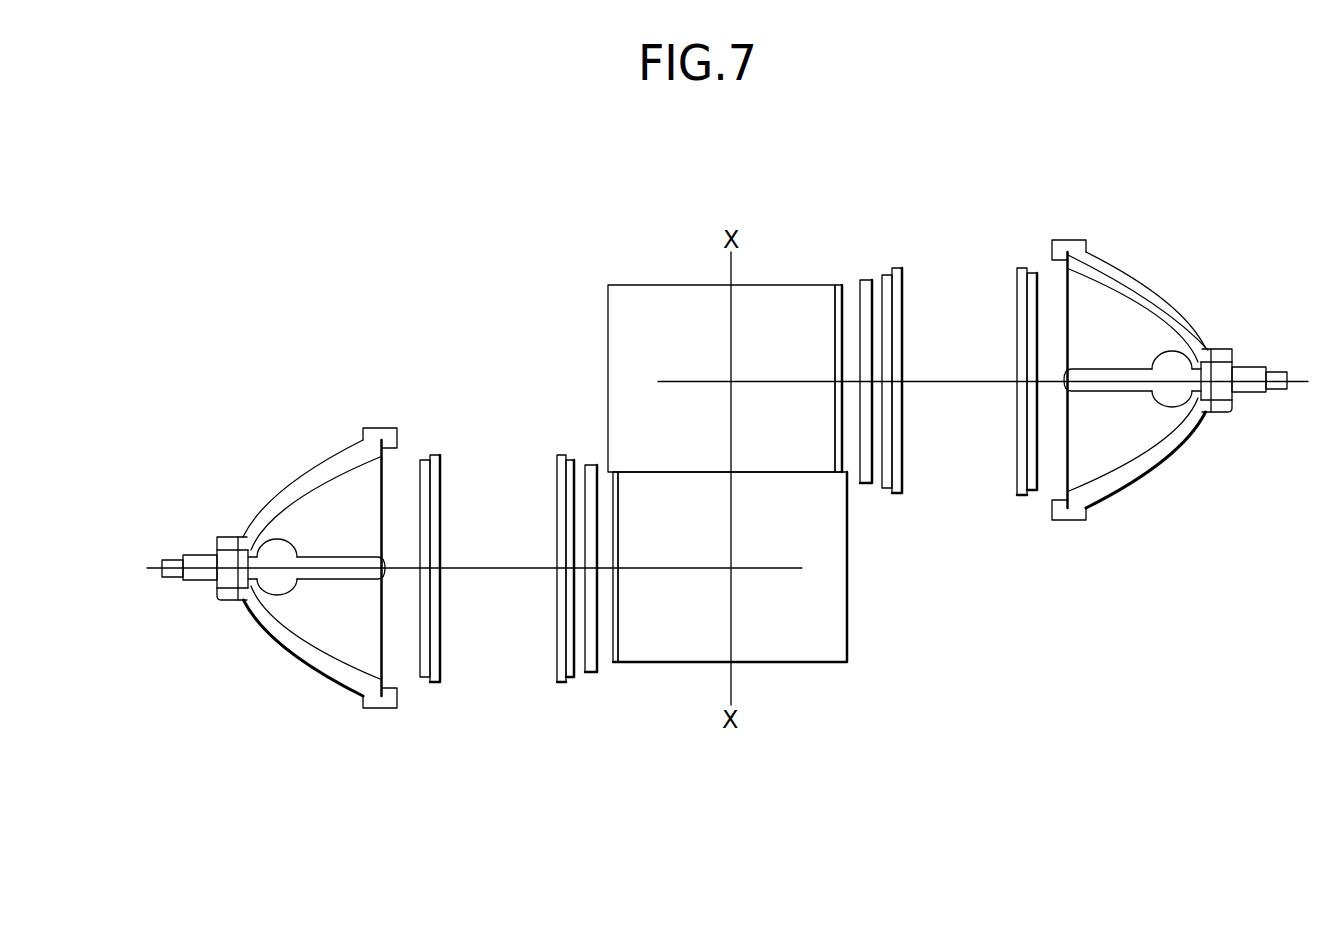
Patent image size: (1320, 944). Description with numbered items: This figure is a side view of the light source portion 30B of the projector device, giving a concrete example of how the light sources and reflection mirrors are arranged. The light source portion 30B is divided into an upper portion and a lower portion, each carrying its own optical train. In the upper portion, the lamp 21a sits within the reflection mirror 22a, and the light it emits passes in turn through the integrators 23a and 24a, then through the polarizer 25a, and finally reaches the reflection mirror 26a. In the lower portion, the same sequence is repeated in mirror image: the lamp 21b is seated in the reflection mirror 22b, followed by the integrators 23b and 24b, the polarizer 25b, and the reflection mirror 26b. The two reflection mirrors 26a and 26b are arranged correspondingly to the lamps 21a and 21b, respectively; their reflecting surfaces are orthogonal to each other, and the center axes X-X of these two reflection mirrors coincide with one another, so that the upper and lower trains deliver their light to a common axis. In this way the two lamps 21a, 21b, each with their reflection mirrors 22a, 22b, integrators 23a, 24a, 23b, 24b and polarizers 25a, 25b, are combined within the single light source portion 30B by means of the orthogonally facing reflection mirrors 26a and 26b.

The light source portion 30B is at (1185, 213).
The lamp 21a is at (1115, 393).
The lamp 21b is at (327, 580).
The reflection mirror 22a is at (1178, 468).
The reflection mirror 22b is at (265, 650).
The integrator 23a is at (1025, 270).
The integrator 23b is at (432, 455).
The integrator 24a is at (893, 268).
The integrator 24b is at (563, 455).
The polarizer 25a is at (863, 280).
The polarizer 25b is at (590, 467).
The reflection mirror 26a is at (647, 302).
The reflection mirror 26b is at (648, 643).